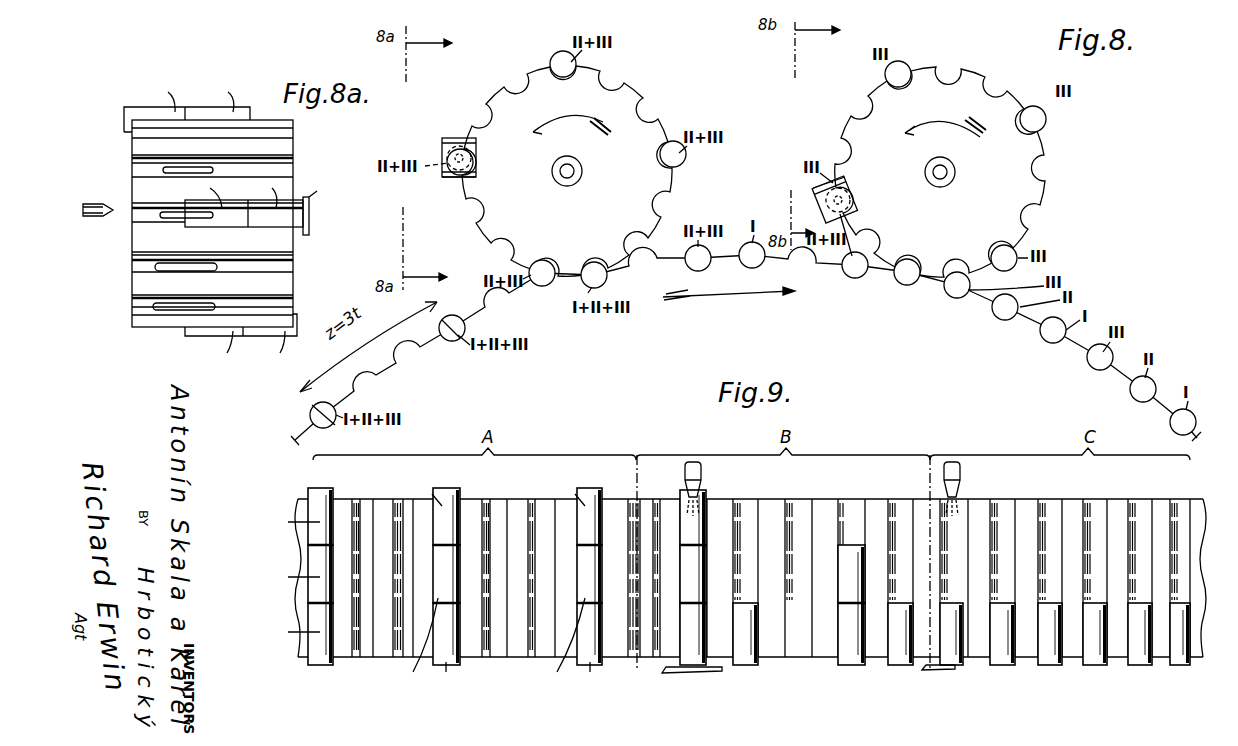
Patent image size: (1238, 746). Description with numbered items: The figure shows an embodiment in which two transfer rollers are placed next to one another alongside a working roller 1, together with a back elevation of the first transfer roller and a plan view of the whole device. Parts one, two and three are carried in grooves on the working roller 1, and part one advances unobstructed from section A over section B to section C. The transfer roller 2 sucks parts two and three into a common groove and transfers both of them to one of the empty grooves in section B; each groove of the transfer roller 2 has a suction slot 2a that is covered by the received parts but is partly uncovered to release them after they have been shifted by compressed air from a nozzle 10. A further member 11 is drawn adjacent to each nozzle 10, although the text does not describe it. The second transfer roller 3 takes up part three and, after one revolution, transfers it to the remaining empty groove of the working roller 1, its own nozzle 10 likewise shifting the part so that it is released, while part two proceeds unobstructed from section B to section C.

In FIG. 8, the working roller 1 is at (1196, 438).
In FIG. 9, the working roller 1 is at (1200, 512).
In FIG. 8A, the transfer roller 2 is at (285, 188).
In FIG. 8, the transfer roller 2 is at (484, 222).
In FIG. 8A, the suction slot 2a is at (152, 265).
In FIG. 8, the transfer roller 3 is at (1043, 188).
In FIG. 8A, the nozzle 10 is at (102, 204).
In FIG. 8, the nozzle 10 is at (442, 145).
In FIG. 9, the nozzle 10 is at (962, 470).
In FIG. 8A, the guide plate 11 is at (307, 217).
In FIG. 8, the guide plate 11 is at (826, 185).
In FIG. 9, the guide plate 11 is at (920, 702).